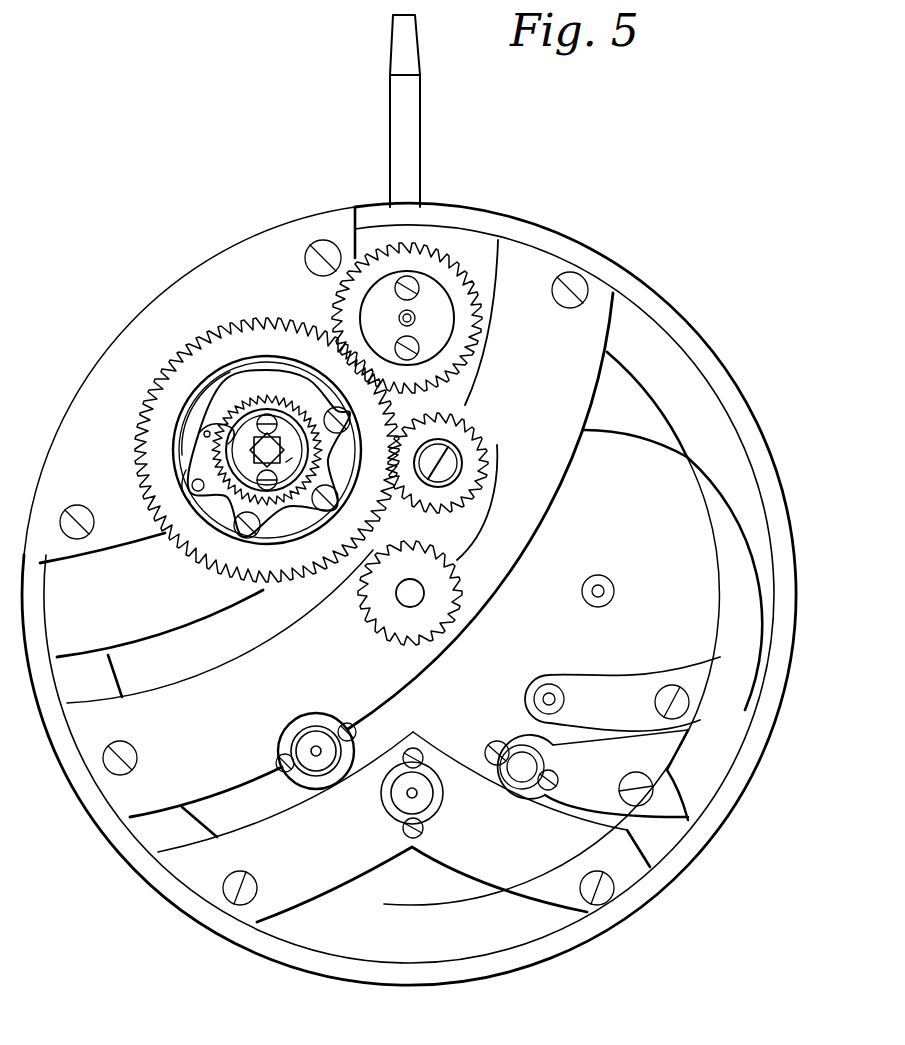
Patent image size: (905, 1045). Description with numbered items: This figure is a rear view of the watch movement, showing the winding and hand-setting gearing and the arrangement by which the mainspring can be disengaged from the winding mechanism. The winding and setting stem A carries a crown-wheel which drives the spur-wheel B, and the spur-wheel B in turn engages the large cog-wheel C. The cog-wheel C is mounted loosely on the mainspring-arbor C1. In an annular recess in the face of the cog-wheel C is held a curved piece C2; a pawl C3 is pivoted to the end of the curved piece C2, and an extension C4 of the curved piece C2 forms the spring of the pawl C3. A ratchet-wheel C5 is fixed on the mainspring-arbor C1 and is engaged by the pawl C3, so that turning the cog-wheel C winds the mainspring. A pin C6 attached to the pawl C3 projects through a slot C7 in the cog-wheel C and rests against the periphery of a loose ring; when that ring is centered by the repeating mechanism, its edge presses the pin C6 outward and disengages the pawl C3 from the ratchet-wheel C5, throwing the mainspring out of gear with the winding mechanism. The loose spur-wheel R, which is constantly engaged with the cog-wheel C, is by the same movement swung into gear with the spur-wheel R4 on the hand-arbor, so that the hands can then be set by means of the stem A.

The winding and setting stem A is at (422, 156).
The spur-wheel B is at (418, 347).
The cog-wheel C is at (247, 347).
The mainspring-arbor C1 is at (262, 452).
The curved piece C2 is at (269, 455).
The pawl C3 is at (193, 463).
The extension of the curved piece C4 is at (217, 395).
The ratchet-wheel C5 is at (294, 469).
The pin C6 is at (212, 430).
The slot C7 is at (211, 427).
The loose spur-wheel R is at (480, 463).
The spur-wheel on the hand-arbor R4 is at (440, 603).